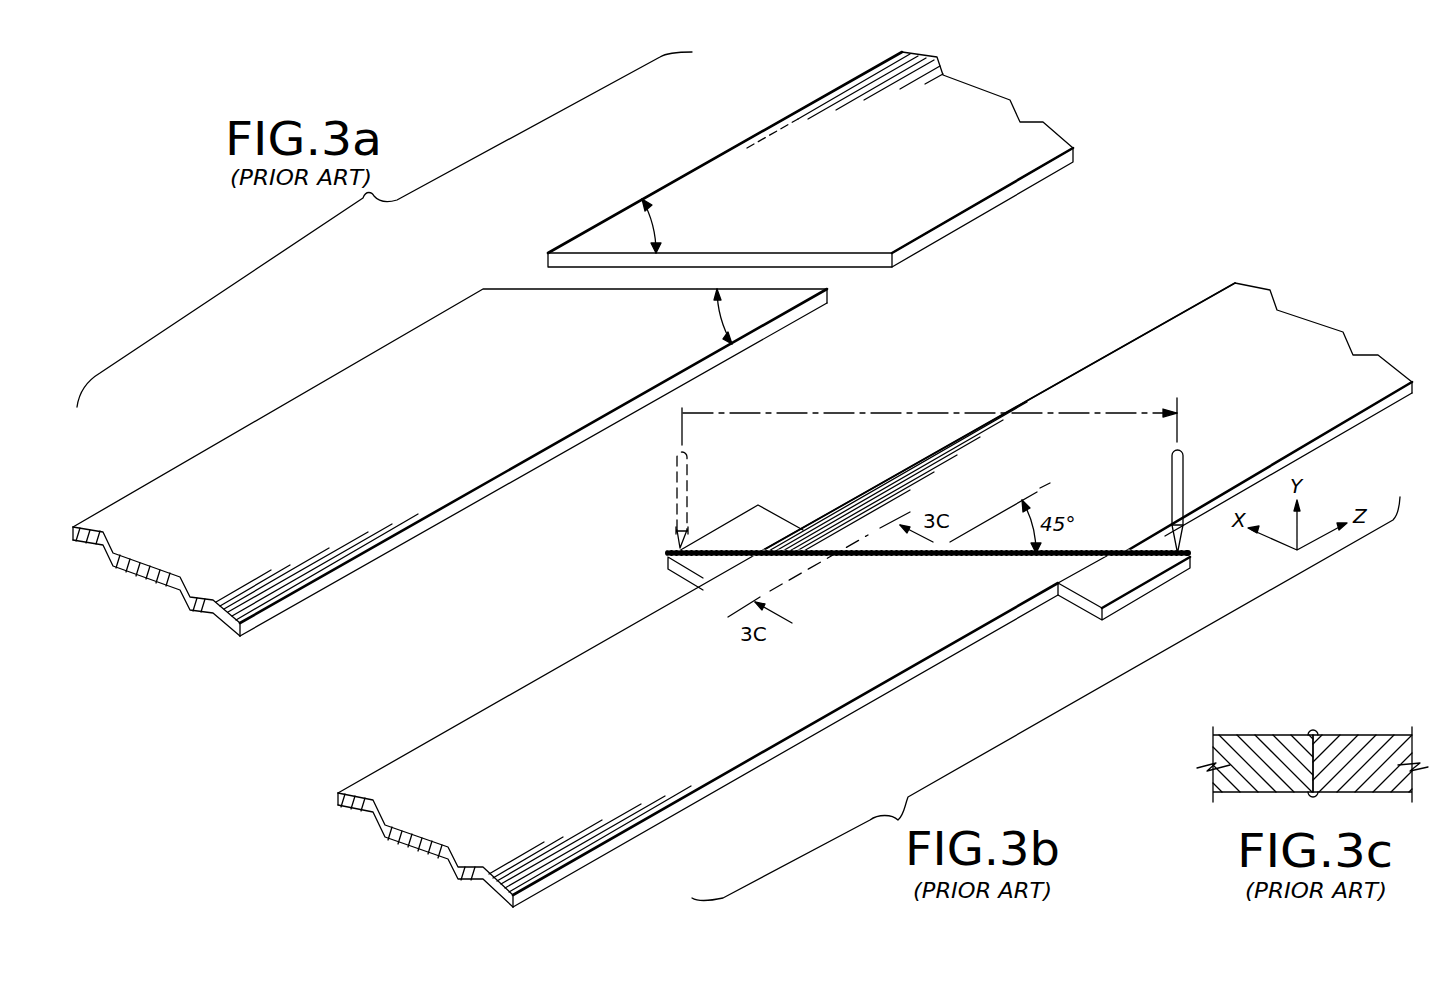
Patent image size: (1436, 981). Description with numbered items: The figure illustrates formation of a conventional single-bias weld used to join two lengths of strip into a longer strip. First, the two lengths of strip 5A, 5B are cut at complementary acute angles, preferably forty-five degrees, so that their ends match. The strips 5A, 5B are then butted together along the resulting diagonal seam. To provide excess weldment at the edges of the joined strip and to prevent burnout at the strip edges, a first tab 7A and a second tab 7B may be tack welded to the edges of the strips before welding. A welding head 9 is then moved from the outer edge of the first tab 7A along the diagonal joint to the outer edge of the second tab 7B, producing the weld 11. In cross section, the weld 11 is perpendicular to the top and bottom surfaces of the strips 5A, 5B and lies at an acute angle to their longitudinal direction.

In FIG. 3A, the strip 5A is at (278, 437).
In FIG. 3B, the strip 5A is at (555, 693).
In FIG. 3C, the strip 5A is at (1243, 733).
In FIG. 3A, the strip 5B is at (797, 160).
In FIG. 3B, the strip 5B is at (1198, 333).
In FIG. 3C, the strip 5B is at (1390, 733).
In FIG. 3B, the first tab 7A is at (737, 533).
In FIG. 3B, the second tab 7B is at (1092, 590).
In FIG. 3B, the welding head 9 is at (1183, 472).
In FIG. 3B, the weld 11 is at (1090, 550).
In FIG. 3C, the weld 11 is at (1313, 733).